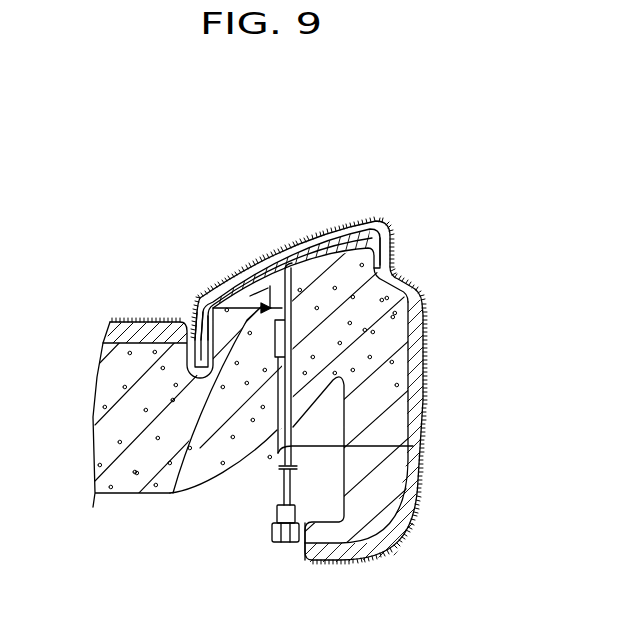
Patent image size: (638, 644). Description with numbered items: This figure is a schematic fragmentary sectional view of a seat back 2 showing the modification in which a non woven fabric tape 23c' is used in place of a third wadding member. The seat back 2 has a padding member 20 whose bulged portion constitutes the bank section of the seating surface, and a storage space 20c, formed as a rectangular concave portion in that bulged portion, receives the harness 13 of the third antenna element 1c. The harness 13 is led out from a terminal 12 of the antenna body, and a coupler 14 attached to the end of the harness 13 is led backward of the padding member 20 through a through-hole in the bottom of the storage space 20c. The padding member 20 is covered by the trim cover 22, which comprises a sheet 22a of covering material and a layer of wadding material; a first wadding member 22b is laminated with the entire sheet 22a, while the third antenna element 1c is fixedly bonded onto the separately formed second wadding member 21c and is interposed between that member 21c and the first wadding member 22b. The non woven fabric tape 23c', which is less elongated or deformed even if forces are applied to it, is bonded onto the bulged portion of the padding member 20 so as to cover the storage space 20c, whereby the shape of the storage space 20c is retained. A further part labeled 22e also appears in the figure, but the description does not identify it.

The seat back 2 is at (95, 366).
The terminal 12 is at (175, 490).
The harness 13 is at (413, 447).
The coupler 14 is at (284, 543).
The third antenna element 1c is at (207, 298).
The padding member 20 is at (388, 342).
The storage space 20c is at (276, 248).
The second wadding member 21c is at (341, 224).
The trim cover 22 is at (403, 227).
The sheet of covering material 22a is at (372, 217).
The first wadding member 22b is at (306, 236).
The attachment leg 22e is at (279, 440).
The non woven fabric tape 23c' is at (204, 247).